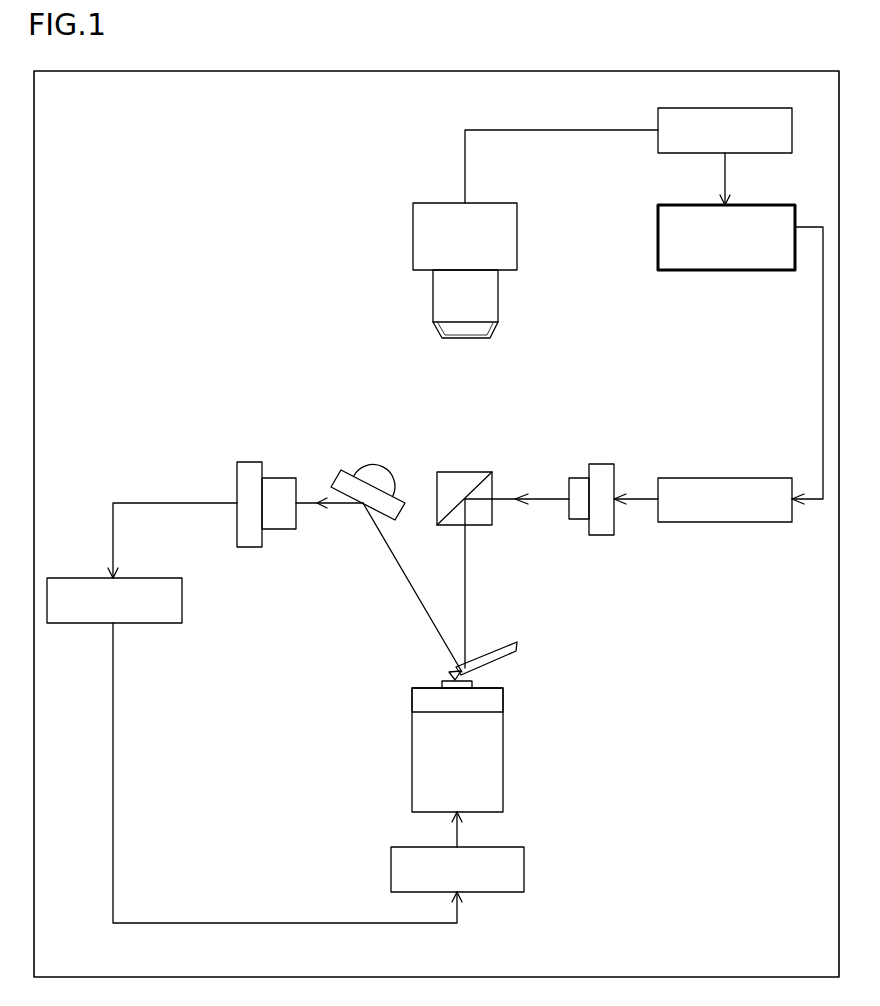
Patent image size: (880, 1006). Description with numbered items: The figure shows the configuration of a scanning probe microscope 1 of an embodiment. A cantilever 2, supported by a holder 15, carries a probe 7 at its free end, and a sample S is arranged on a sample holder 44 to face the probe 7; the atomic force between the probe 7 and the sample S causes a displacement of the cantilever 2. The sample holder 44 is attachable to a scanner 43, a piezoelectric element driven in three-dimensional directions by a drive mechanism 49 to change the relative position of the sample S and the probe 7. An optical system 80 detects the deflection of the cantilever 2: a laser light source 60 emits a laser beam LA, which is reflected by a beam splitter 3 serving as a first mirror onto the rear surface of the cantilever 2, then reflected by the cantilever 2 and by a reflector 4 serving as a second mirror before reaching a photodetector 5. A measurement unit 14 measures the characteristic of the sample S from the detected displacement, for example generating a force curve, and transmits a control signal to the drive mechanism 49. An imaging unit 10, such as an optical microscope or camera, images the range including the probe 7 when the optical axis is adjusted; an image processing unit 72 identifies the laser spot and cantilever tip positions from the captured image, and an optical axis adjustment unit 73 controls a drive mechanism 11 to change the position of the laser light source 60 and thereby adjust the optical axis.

The scanning probe microscope 1 is at (797, 69).
The image processing unit 72 is at (752, 106).
The optical axis adjustment unit 73 is at (752, 203).
The imaging unit 10 is at (507, 232).
The optical system 80 is at (344, 413).
The photodetector 5 is at (250, 470).
The reflector 4 is at (350, 478).
The beam splitter 3 is at (467, 478).
The laser beam LA is at (529, 483).
The laser light source 60 is at (600, 472).
The drive mechanism 11 is at (750, 478).
The measurement unit 14 is at (138, 577).
The holder 15 is at (487, 652).
The cantilever 2 is at (465, 668).
The probe 7 is at (450, 677).
The sample S is at (442, 684).
The sample holder 44 is at (492, 698).
The scanner 43 is at (492, 753).
The drive mechanism 49 is at (482, 846).